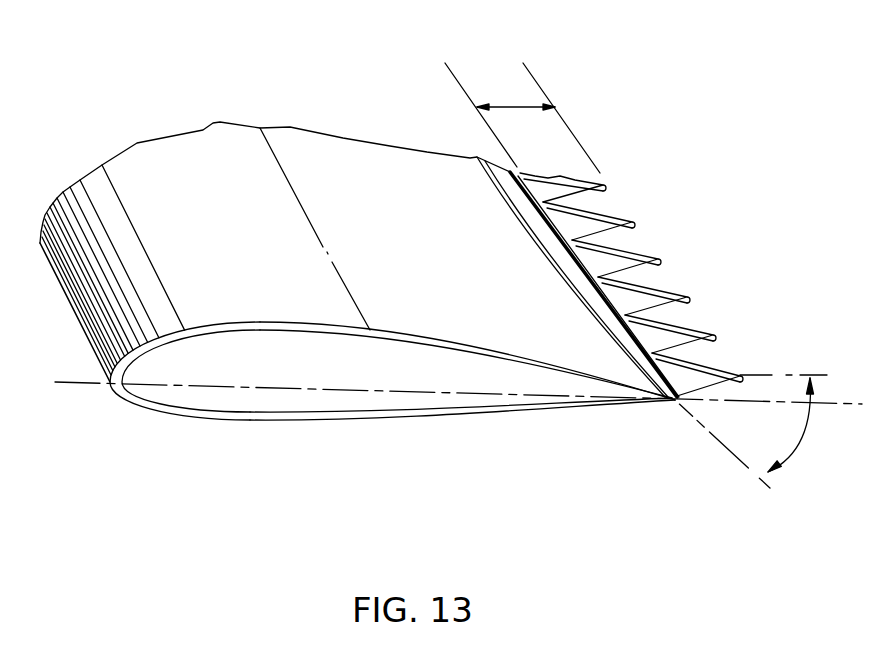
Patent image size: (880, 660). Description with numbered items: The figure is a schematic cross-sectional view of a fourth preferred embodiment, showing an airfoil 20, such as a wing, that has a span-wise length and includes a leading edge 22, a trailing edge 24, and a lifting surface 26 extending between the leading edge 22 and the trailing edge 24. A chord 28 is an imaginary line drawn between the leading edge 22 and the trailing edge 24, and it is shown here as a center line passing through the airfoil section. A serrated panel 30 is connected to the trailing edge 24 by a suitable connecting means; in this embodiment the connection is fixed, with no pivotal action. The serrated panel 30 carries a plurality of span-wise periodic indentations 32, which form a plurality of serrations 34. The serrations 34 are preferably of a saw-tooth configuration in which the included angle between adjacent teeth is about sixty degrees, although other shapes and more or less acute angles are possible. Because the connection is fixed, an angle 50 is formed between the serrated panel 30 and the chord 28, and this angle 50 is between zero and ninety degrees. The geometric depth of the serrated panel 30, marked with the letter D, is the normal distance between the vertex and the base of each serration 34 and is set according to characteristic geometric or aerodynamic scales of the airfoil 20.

The airfoil 20 is at (437, 273).
The leading edge 22 is at (136, 292).
The trailing edge 24 is at (631, 265).
The lifting surface 26 is at (467, 214).
The chord 28 is at (462, 458).
The serrated panel 30 is at (747, 330).
The periodic indentations 32 is at (678, 227).
The serrations 34 is at (705, 310).
The angle 50 is at (755, 431).